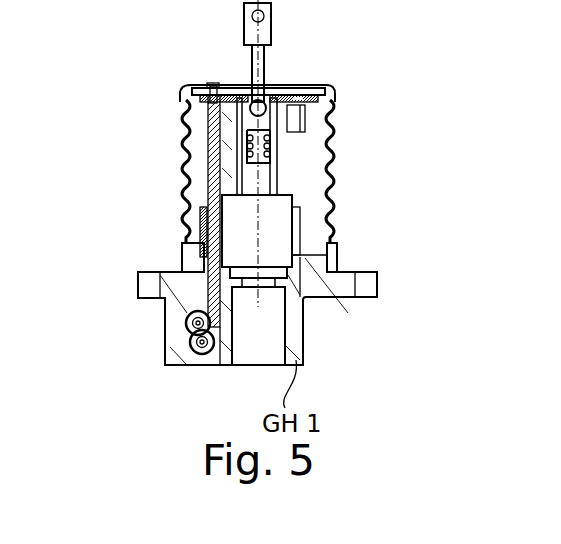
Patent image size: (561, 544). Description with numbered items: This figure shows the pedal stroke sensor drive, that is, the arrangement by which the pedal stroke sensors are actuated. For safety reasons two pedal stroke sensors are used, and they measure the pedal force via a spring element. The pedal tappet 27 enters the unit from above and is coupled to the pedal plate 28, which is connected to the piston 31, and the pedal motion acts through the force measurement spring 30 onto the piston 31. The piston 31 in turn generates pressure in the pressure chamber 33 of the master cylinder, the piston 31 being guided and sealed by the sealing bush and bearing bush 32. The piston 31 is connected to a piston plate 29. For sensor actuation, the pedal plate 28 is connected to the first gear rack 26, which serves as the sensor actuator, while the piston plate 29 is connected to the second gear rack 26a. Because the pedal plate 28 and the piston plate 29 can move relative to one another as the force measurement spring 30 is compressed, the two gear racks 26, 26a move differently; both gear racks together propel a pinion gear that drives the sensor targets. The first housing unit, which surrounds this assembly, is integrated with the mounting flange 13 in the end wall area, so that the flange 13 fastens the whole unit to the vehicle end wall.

The pedal tappet 27 is at (265, 14).
The pedal plate 28 is at (272, 89).
The piston plate 29 is at (327, 100).
The gear rack 1 26 is at (213, 180).
The gear rack 2 26a is at (295, 123).
The force measurement spring 30 is at (273, 135).
The piston 31 is at (275, 175).
The sealing bush and bearing bush 32 is at (272, 222).
The flange for fastening to the end wall 13 is at (323, 283).
The pressure chamber for pistons 33 is at (285, 330).